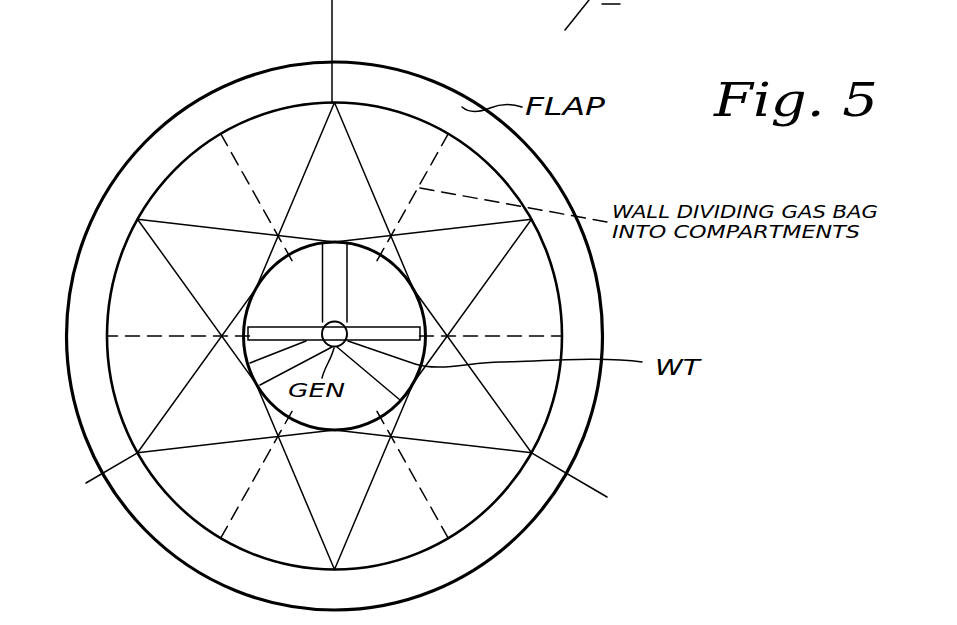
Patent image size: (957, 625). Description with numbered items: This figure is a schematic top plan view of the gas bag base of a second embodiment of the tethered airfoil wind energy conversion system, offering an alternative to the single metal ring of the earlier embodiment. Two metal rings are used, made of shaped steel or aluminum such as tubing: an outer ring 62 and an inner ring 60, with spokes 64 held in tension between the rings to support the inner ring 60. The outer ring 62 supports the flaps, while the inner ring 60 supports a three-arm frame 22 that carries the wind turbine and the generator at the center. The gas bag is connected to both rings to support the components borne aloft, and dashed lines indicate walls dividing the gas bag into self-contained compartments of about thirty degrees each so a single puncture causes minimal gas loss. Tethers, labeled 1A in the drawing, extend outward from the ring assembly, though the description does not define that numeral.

The outer ring 62 is at (515, 187).
The spokes 64 is at (497, 268).
The inner ring 60 is at (425, 323).
The three-arm frame 22 is at (402, 375).
The tether 1A is at (592, 512).